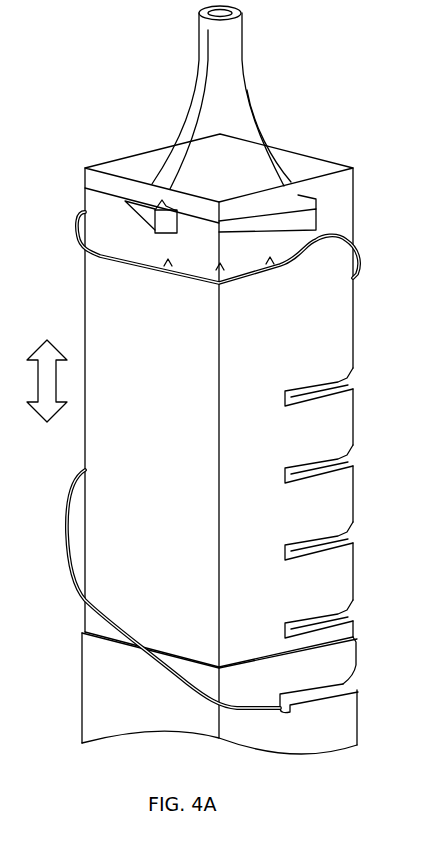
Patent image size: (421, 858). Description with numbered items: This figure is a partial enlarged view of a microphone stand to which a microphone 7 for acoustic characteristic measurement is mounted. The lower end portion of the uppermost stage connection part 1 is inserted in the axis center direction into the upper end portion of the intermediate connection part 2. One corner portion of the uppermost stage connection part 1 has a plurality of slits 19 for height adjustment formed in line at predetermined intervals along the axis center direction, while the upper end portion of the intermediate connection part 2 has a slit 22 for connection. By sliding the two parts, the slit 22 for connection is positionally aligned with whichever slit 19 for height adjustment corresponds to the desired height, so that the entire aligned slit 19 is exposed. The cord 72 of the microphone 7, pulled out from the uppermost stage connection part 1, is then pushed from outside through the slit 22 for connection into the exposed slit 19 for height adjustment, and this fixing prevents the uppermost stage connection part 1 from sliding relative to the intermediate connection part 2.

The uppermost stage connection part 1 is at (60, 273).
The intermediate connection part 2 is at (58, 686).
The microphone for acoustic characteristic measurement 7 is at (243, 52).
The slits for height adjustment 19 is at (362, 374).
The slit for connection 22 is at (362, 653).
The cord 72 is at (68, 541).